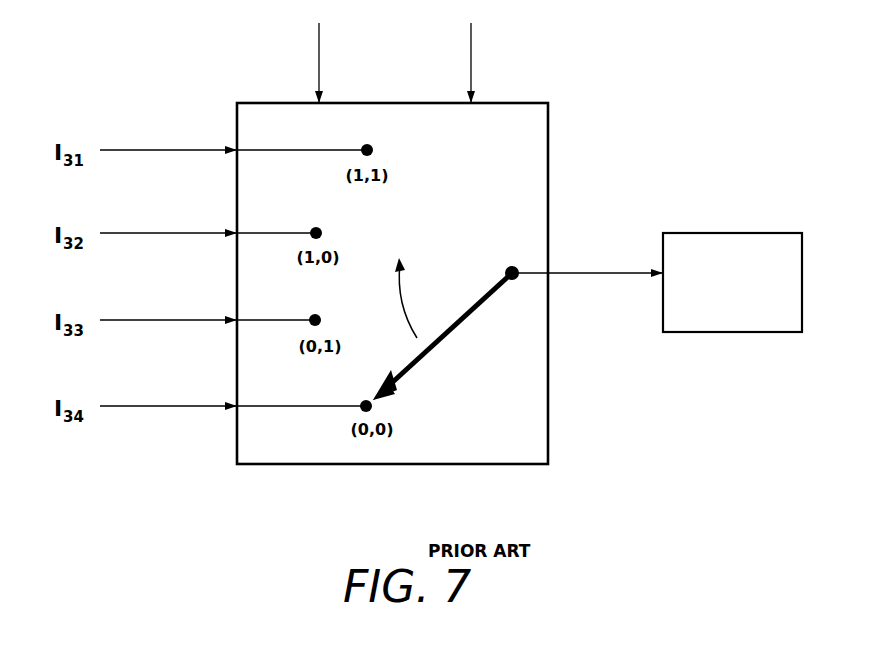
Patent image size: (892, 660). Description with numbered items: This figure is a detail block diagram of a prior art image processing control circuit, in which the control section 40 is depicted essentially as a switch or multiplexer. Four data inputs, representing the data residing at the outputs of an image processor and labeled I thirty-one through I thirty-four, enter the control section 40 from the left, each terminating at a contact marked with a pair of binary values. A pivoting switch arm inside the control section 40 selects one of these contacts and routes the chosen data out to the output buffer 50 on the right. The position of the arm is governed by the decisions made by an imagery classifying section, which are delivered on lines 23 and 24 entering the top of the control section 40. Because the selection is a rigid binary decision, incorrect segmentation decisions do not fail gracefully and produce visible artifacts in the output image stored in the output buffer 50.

The line 23 is at (320, 58).
The line 24 is at (472, 62).
The control section 40 is at (533, 153).
The output buffer 50 is at (758, 313).